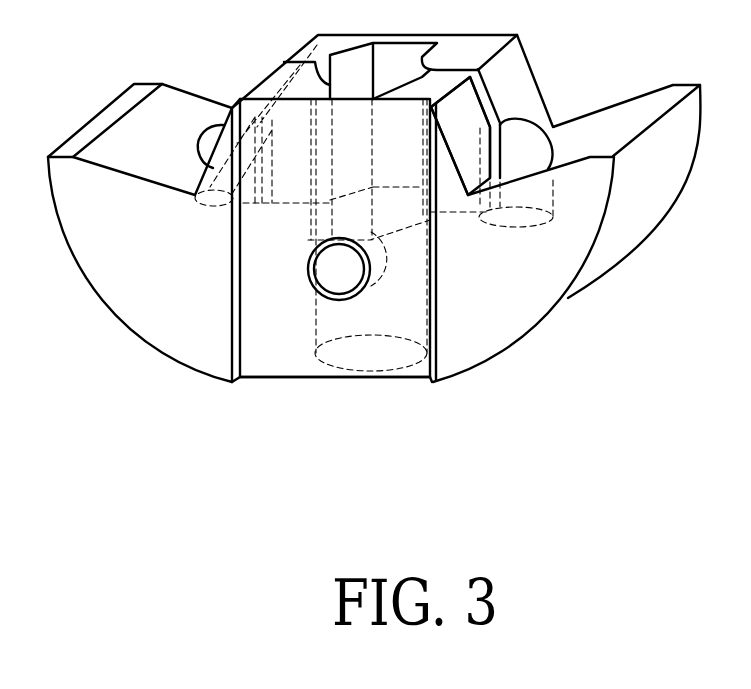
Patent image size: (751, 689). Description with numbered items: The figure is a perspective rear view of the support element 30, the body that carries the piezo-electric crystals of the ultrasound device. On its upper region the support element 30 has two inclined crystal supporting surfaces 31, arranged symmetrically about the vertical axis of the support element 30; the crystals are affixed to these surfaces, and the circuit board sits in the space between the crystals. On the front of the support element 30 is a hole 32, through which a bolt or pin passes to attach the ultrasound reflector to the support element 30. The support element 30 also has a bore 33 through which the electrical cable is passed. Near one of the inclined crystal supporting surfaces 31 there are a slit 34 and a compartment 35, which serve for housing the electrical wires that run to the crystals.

The support element 30 is at (600, 438).
The inclined crystal supporting surfaces 31 is at (173, 113).
The hole 32 is at (348, 268).
The bore 33 is at (370, 392).
The slit 34 is at (513, 163).
The compartment 35 is at (478, 90).